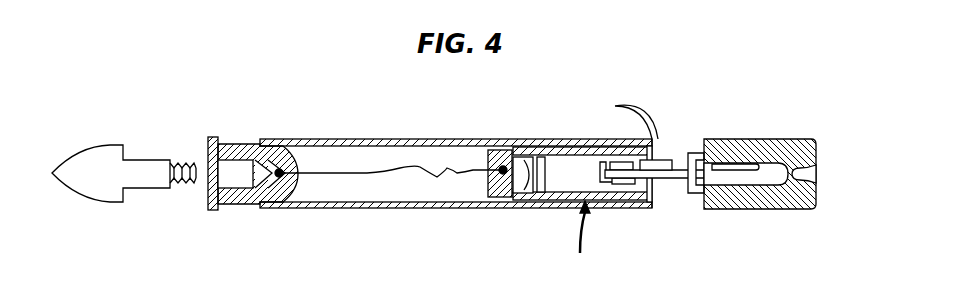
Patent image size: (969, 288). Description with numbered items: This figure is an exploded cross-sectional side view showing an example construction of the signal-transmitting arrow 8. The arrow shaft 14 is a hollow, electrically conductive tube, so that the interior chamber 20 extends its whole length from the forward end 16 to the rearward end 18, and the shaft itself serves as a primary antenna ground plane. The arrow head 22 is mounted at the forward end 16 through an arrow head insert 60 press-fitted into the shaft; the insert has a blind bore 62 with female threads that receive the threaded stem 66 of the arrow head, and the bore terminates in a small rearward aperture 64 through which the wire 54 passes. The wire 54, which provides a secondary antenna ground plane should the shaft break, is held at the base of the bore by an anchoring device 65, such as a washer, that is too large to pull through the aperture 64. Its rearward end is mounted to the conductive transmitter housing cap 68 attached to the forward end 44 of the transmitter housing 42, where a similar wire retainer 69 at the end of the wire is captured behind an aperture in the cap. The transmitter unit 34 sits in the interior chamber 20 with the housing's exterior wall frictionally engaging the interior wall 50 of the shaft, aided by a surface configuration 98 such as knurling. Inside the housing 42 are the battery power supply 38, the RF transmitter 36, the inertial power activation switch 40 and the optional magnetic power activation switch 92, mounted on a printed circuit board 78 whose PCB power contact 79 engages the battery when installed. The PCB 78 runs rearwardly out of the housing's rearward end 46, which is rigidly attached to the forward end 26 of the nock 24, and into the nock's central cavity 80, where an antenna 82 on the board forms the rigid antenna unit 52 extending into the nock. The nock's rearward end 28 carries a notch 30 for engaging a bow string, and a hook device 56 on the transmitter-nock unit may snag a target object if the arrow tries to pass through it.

The arrow 8 is at (352, 98).
The arrow shaft 14 is at (498, 150).
The forward end 16 is at (208, 200).
The rearward end 18 is at (656, 195).
The interior chamber 20 is at (468, 188).
The arrow head 22 is at (80, 200).
The nock 24 is at (770, 139).
The forward end 26 is at (694, 153).
The rearward end 28 is at (819, 158).
The notch 30 is at (798, 171).
The transmitter unit 34 is at (582, 241).
The RF transmitter 36 is at (668, 160).
The battery power supply 38 is at (541, 157).
The inertial power activation switch 40 is at (568, 147).
The transmitter housing 42 is at (560, 203).
The forward end 44 is at (520, 158).
The rearward end 46 is at (667, 181).
The interior wall 50 is at (454, 145).
The antenna unit 52 is at (737, 210).
The wire 54 is at (418, 168).
The hook device 56 is at (655, 138).
The arrow head insert 60 is at (236, 144).
The blind bore 62 is at (252, 176).
The rearward aperture 64 is at (294, 190).
The anchoring device 65 is at (280, 169).
The stem 66 is at (182, 160).
The transmitter housing cap 68 is at (495, 200).
The piston ball 69 is at (505, 160).
The printed circuit board 78 is at (680, 180).
The PCB power contact 79 is at (603, 188).
The central cavity 80 is at (705, 150).
The antenna 82 is at (736, 164).
The magnetic power activation switch 92 is at (635, 140).
The surface configuration 98 is at (606, 150).